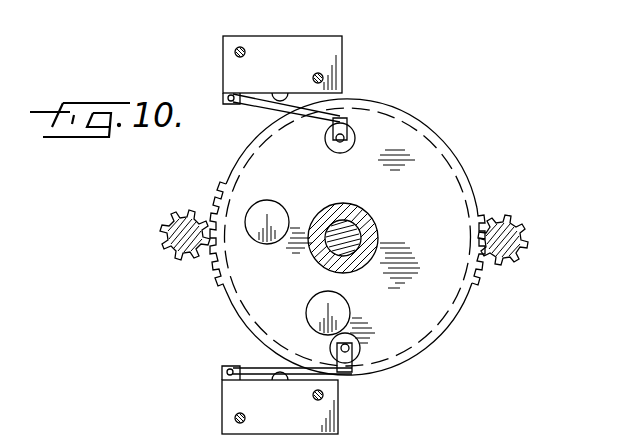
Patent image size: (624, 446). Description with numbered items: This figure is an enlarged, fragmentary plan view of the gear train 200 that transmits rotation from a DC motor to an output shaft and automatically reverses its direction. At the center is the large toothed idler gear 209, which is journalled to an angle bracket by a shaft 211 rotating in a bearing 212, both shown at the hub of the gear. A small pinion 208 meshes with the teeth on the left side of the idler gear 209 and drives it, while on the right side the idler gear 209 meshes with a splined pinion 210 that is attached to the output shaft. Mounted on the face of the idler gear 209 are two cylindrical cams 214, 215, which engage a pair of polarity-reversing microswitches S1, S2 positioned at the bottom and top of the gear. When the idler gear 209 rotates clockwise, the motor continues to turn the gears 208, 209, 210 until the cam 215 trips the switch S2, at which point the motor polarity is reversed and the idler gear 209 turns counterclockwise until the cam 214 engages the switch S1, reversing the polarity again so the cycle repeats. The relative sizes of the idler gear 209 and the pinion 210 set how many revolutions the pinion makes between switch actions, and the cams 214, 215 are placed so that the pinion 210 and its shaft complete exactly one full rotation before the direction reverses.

The gear train 200 is at (193, 290).
The pinion 208 is at (165, 258).
The idler gear 209 is at (449, 148).
The splined pinion 210 is at (523, 218).
The shaft 211 is at (360, 220).
The bearing 212 is at (362, 243).
The cam 214 is at (312, 305).
The cam 215 is at (275, 200).
The polarity-reversing microswitch S1 is at (294, 420).
The polarity-reversing microswitch S2 is at (288, 72).